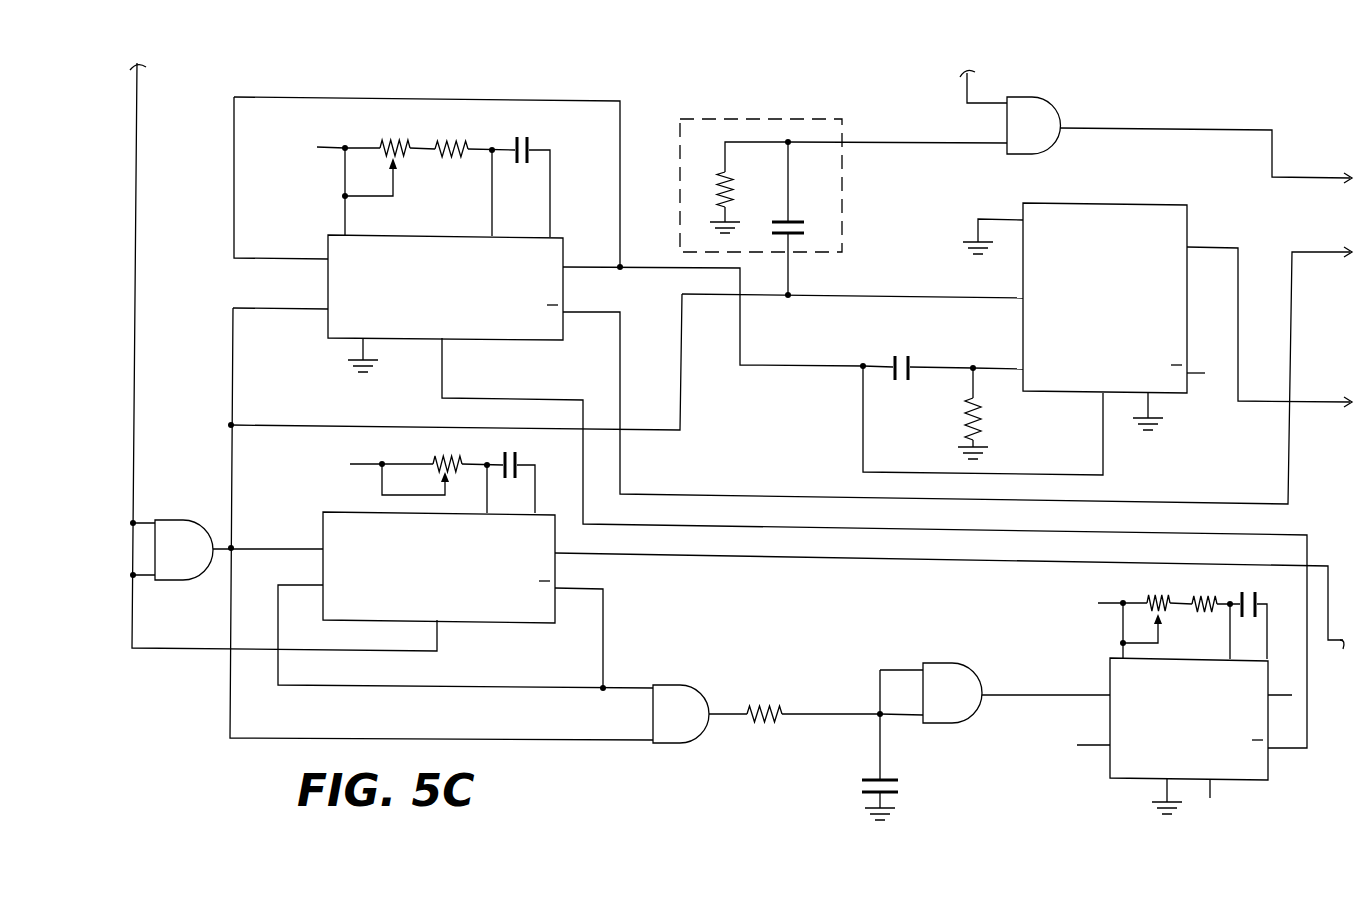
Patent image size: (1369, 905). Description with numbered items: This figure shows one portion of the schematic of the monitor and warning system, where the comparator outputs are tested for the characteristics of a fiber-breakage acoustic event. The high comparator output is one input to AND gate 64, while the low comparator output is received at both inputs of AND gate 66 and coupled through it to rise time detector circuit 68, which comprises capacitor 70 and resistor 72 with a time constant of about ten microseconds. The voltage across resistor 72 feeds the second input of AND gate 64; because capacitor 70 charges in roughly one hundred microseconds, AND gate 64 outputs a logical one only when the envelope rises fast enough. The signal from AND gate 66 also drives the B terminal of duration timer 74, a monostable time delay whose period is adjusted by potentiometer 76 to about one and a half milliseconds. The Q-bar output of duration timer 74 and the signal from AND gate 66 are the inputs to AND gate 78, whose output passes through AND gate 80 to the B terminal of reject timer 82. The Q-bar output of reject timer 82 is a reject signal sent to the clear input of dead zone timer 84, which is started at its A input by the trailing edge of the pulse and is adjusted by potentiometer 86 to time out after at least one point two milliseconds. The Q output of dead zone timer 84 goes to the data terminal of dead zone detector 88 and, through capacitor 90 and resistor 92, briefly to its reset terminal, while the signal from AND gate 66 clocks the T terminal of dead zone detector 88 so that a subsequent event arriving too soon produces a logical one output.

The AND gate 64 is at (1044, 115).
The AND gate 66 is at (228, 528).
The rise time detector circuit 68 is at (825, 233).
The capacitor 70 is at (800, 230).
The resistor 72 is at (737, 186).
The duration timer 74 is at (505, 590).
The potentiometer 76 is at (439, 458).
The AND gate 78 is at (664, 688).
The AND gate 80 is at (948, 672).
The reject timer 82 is at (1200, 771).
The dead zone timer 84 is at (515, 316).
The potentiometer 86 is at (407, 116).
The dead zone detector 88 is at (1132, 241).
The capacitor 90 is at (898, 358).
The resistor 92 is at (983, 428).